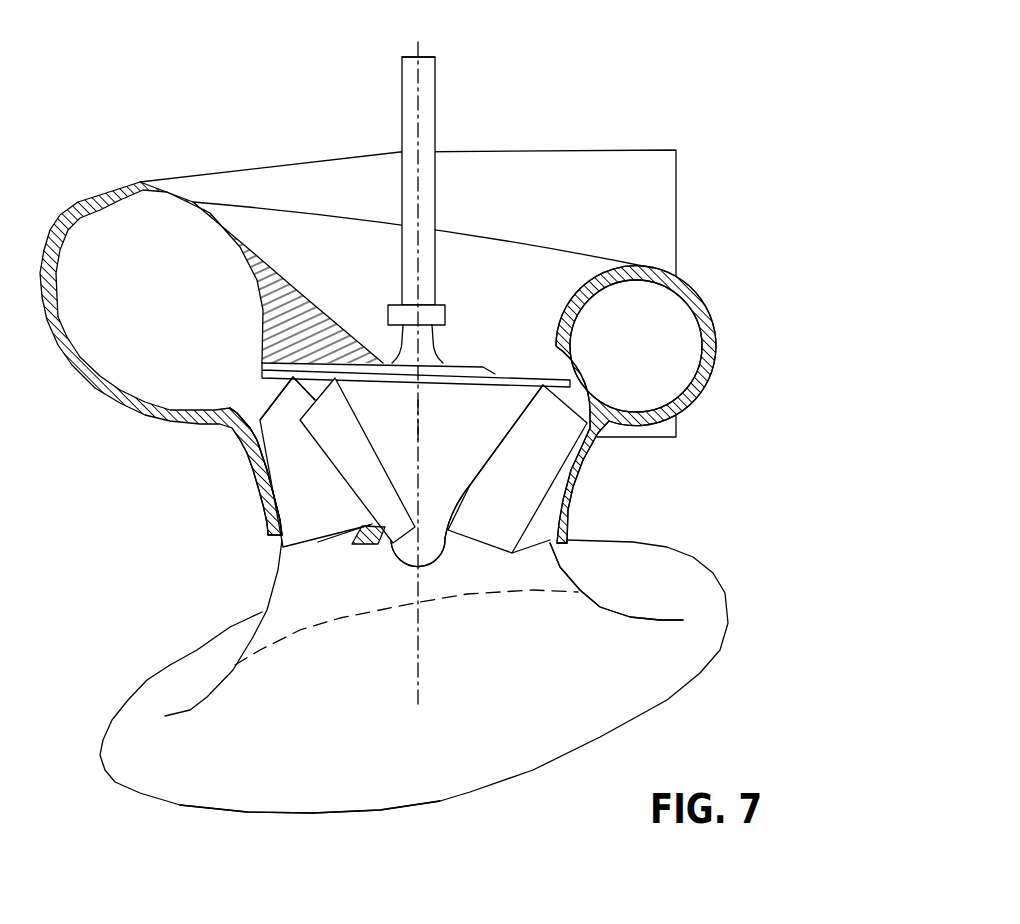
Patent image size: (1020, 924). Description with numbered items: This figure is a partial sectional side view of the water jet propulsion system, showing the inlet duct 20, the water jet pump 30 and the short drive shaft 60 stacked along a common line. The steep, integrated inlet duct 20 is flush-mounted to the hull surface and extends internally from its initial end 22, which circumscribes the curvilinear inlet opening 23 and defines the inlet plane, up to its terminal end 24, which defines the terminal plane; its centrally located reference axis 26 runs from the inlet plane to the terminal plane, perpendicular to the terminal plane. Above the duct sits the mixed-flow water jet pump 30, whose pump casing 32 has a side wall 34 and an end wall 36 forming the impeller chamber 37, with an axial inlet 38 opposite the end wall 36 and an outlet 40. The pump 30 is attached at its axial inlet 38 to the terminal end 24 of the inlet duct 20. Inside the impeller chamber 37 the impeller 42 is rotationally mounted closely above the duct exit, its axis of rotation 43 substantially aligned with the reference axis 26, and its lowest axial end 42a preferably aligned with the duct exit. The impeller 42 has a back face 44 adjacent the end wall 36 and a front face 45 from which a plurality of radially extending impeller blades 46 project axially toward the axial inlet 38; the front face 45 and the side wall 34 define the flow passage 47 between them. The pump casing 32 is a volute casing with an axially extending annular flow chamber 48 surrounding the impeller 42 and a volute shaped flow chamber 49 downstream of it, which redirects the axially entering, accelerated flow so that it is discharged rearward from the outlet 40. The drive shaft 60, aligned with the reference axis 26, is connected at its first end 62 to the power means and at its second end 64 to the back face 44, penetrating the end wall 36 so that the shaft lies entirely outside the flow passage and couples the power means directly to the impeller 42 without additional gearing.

The inlet duct 20 is at (778, 632).
The initial end 22 is at (142, 798).
The inlet opening 23 is at (296, 838).
The terminal end 24 is at (567, 533).
The reference axis 26 is at (417, 670).
The water jet pump 30 is at (727, 445).
The pump casing 32 is at (245, 500).
The side wall 34 is at (245, 453).
The end wall 36 is at (518, 373).
The impeller chamber 37 is at (538, 517).
The axial inlet 38 is at (350, 542).
The outlet 40 is at (677, 190).
The impeller 42 is at (458, 481).
The lowest axial end 42a is at (386, 574).
The axis of rotation 43 is at (413, 423).
The back face 44 is at (466, 376).
The front face 45 is at (462, 438).
The impeller blades 46 is at (330, 511).
The flow passage 47 is at (463, 556).
The annular flow chamber 48 is at (246, 398).
The volute shaped flow chamber 49 is at (156, 307).
The drive shaft 60 is at (427, 108).
The first end 62 is at (397, 352).
The second end 64 is at (432, 53).